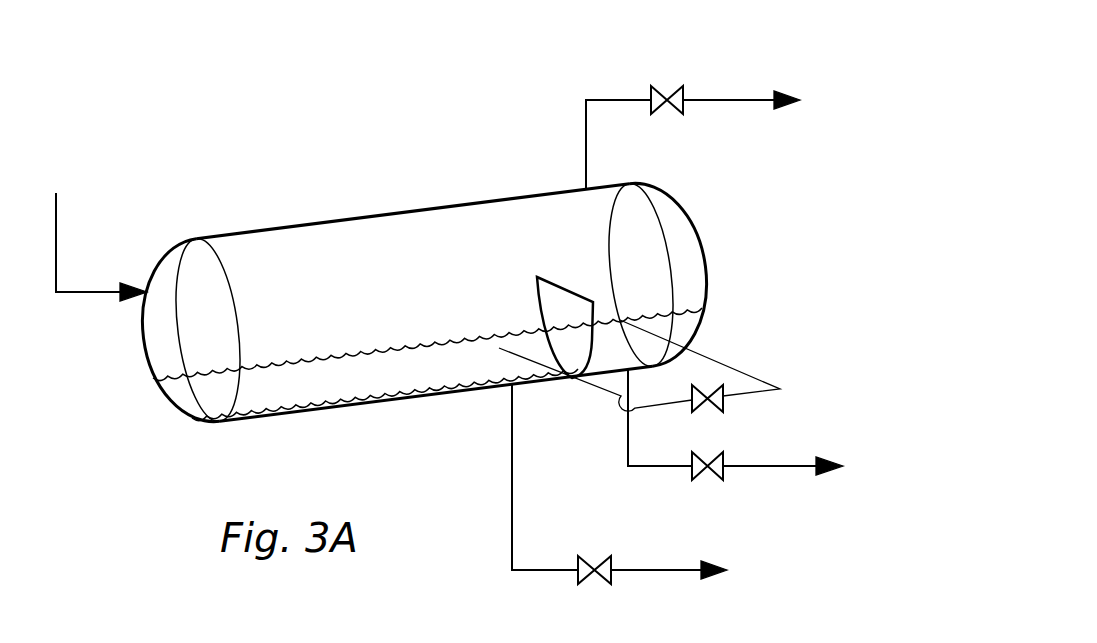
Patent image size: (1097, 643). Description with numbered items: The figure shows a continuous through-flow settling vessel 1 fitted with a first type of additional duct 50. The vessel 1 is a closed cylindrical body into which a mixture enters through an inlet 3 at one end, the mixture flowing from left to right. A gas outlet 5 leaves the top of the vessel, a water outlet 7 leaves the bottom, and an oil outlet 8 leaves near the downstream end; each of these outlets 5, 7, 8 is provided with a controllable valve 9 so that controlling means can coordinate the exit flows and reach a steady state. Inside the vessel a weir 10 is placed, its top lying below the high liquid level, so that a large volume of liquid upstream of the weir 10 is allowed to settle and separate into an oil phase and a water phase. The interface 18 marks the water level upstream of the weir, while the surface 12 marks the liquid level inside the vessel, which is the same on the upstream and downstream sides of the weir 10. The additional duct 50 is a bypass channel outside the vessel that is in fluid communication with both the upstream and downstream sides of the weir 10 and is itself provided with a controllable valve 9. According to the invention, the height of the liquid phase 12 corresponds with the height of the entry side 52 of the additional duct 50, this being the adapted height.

The settling vessel 1 is at (196, 136).
The inlet 3 is at (56, 223).
The gas outlet 5 is at (750, 100).
The water outlet 7 is at (512, 513).
The oil outlet 8 is at (777, 468).
The controllable valve 9 is at (677, 88).
The weir 10 is at (564, 302).
The liquid level surface 12 is at (337, 355).
The interface 18 is at (401, 392).
The additional duct 50 is at (725, 362).
The entry side 52 is at (499, 348).